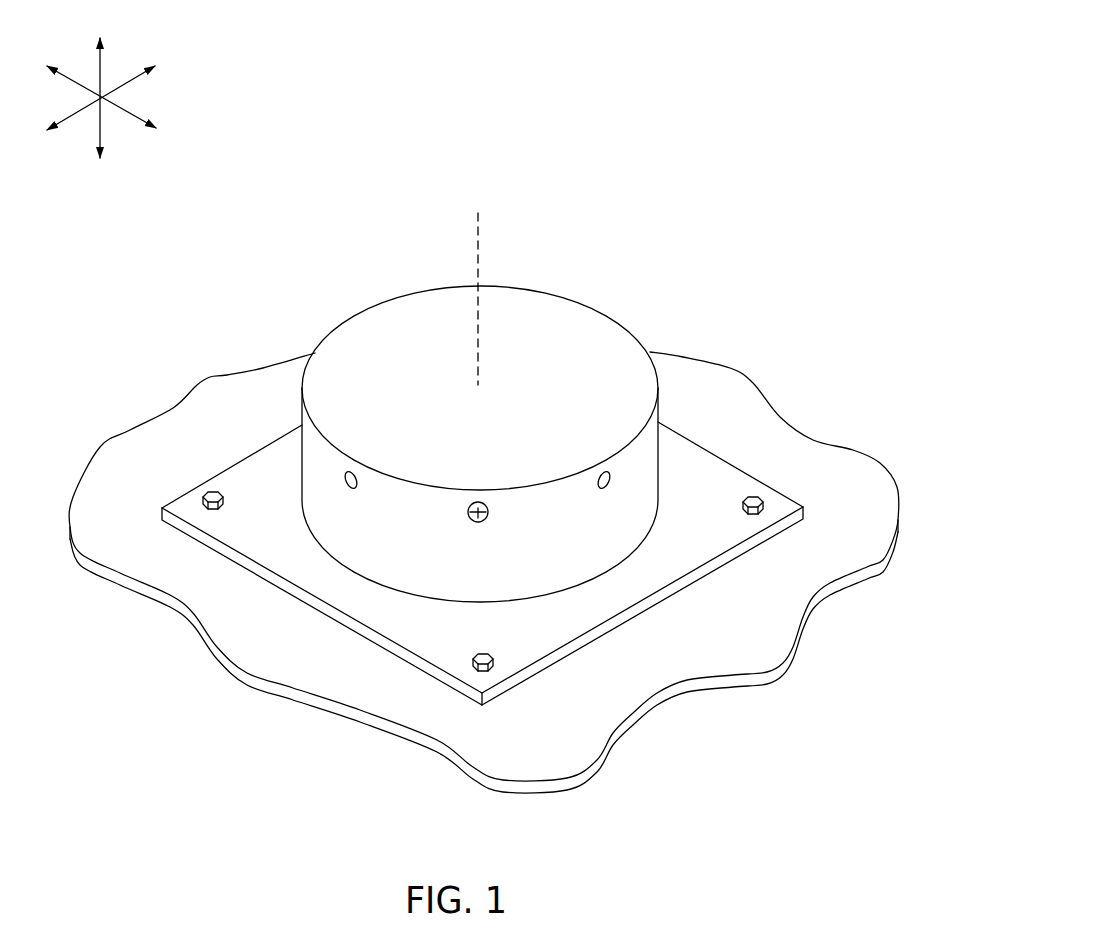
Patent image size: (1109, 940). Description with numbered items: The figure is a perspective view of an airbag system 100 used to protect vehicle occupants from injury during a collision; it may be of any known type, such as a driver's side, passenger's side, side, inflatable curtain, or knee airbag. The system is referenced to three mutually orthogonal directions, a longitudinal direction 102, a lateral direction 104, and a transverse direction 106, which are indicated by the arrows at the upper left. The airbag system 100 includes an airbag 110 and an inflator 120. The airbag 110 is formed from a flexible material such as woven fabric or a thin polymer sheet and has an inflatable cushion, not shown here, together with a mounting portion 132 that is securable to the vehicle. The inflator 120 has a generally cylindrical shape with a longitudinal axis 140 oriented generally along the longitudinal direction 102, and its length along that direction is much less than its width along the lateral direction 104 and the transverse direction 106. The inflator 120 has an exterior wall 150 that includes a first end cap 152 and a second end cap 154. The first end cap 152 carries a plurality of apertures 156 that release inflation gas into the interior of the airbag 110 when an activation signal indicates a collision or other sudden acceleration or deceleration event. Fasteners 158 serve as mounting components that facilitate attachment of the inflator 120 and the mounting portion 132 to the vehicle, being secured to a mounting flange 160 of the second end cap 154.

The airbag system 100 is at (687, 102).
The longitudinal direction 102 is at (104, 58).
The lateral direction 104 is at (135, 80).
The transverse direction 106 is at (134, 118).
The airbag 110 is at (761, 301).
The inflator 120 is at (556, 208).
The mounting portion 132 is at (652, 660).
The longitudinal axis 140 is at (480, 334).
The exterior wall 150 is at (693, 407).
The first end cap 152 is at (556, 285).
The second end cap 154 is at (788, 474).
The apertures 156 is at (355, 492).
The fasteners 158 is at (207, 493).
The mounting flange 160 is at (705, 470).